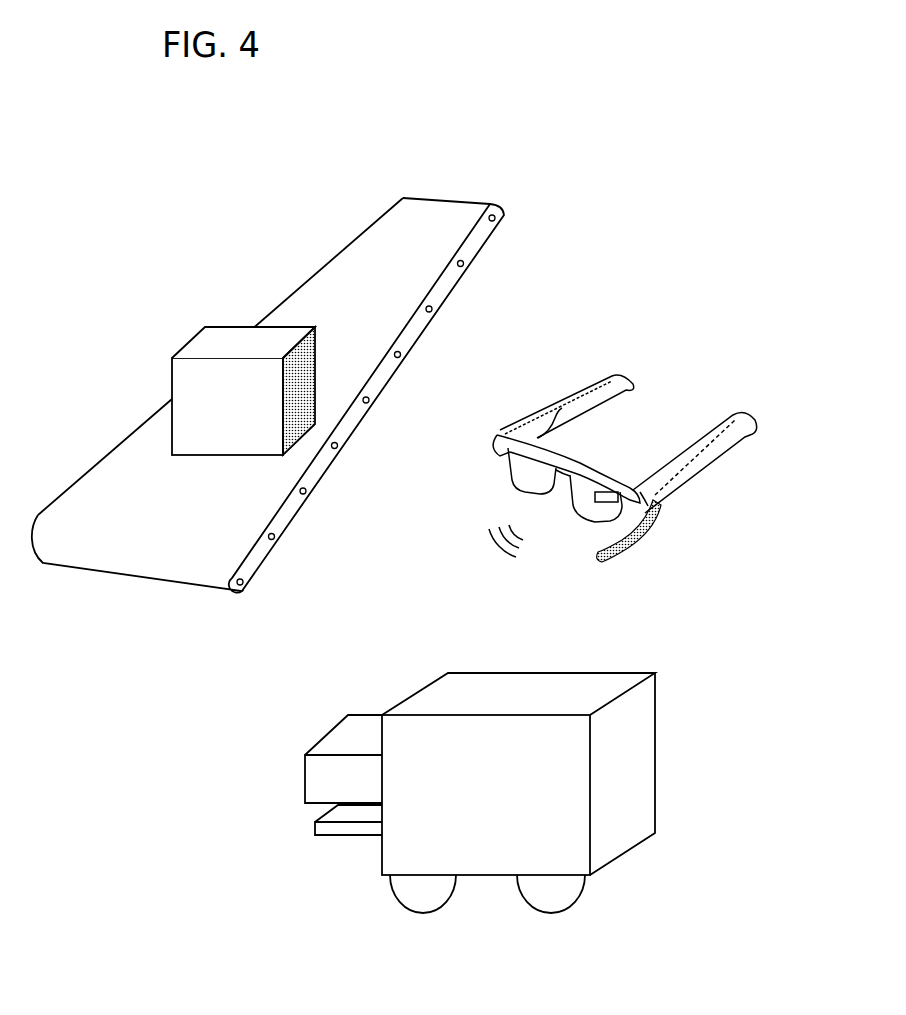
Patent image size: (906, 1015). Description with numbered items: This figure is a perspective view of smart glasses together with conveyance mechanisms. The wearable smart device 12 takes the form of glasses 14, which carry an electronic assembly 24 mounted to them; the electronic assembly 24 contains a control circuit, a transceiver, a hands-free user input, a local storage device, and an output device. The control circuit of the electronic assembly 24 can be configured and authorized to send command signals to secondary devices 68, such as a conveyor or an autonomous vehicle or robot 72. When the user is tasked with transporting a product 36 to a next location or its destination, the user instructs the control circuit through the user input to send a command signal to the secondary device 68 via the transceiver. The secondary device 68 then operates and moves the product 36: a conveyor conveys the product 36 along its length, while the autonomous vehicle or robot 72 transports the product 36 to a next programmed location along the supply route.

The wearable smart device 12 is at (623, 433).
The glasses 14 is at (622, 375).
The electronic assembly 24 is at (670, 497).
The product 36 is at (217, 335).
The secondary device 68 is at (418, 333).
The autonomous vehicle or robot 72 is at (438, 695).